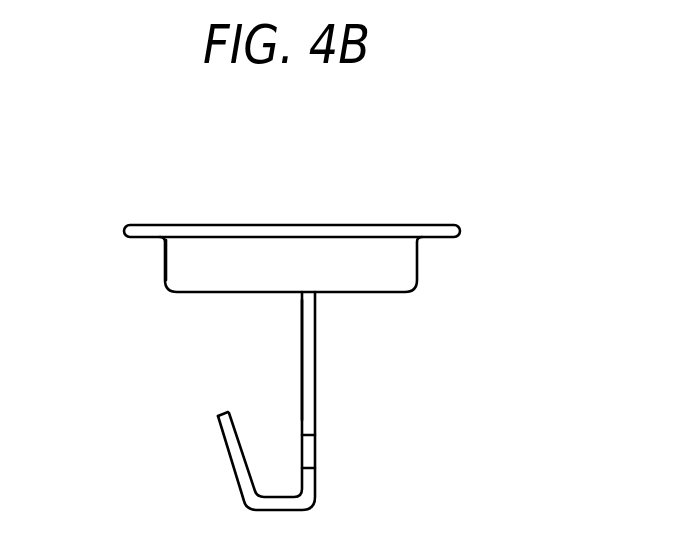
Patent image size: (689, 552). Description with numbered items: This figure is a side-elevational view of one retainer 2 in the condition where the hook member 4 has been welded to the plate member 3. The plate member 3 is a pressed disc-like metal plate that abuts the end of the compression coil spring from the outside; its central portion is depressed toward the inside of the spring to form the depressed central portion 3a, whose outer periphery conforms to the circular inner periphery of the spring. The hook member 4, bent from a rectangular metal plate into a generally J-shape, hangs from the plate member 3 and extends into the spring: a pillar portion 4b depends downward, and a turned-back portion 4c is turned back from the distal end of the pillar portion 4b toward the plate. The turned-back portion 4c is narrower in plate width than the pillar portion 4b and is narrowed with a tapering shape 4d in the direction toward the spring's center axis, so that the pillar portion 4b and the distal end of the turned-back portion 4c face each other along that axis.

The retainer 2 is at (188, 210).
The plate member 3 is at (452, 211).
The depressed central portion 3a is at (183, 274).
The hook member 4 is at (331, 343).
The pillar portion 4b is at (305, 375).
The turned-back portion 4c is at (223, 421).
The tapering shape 4d is at (308, 451).